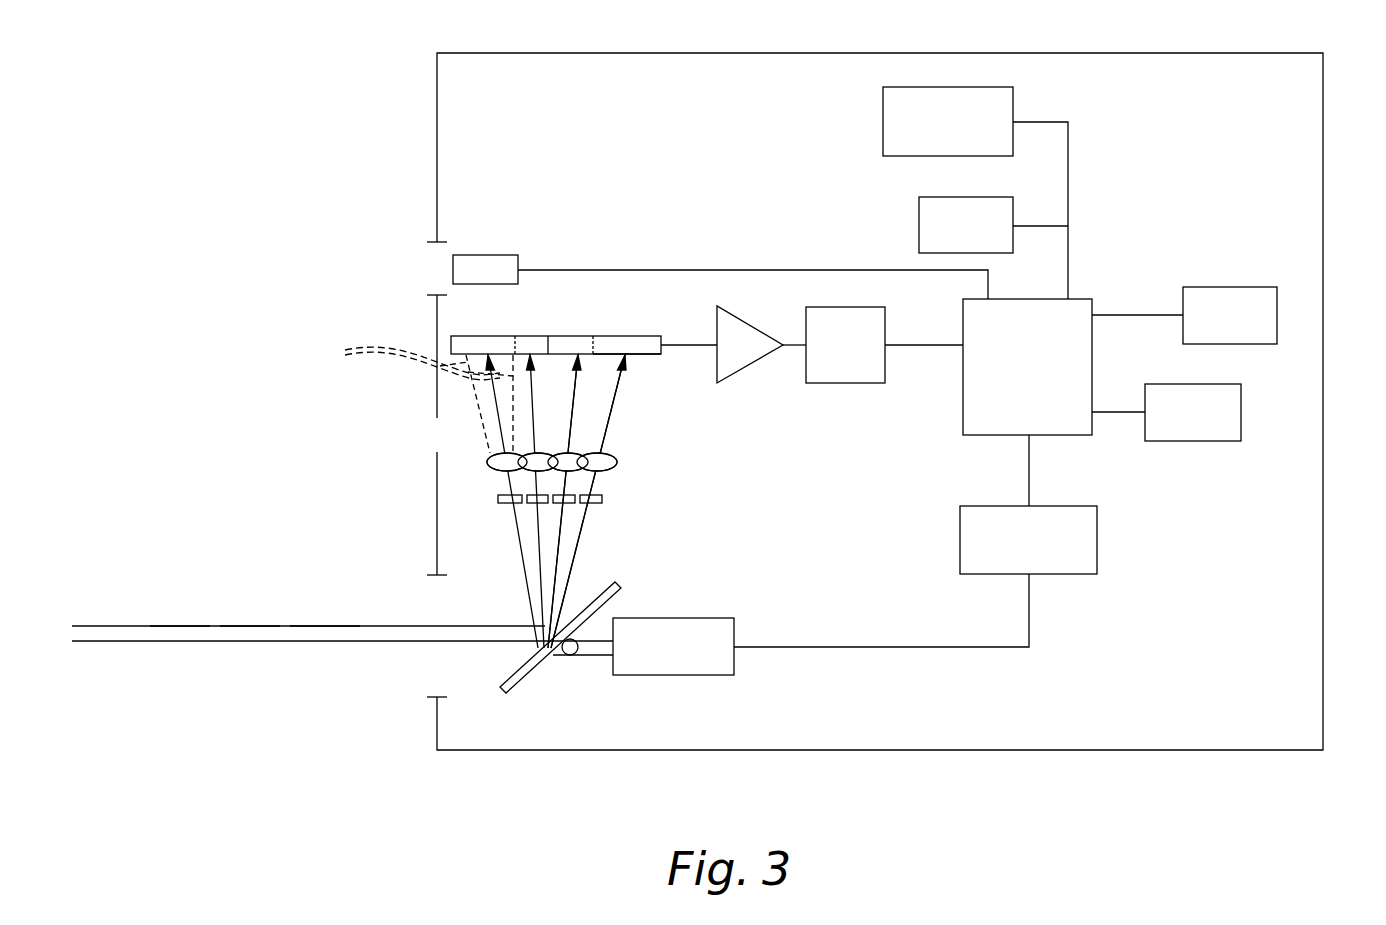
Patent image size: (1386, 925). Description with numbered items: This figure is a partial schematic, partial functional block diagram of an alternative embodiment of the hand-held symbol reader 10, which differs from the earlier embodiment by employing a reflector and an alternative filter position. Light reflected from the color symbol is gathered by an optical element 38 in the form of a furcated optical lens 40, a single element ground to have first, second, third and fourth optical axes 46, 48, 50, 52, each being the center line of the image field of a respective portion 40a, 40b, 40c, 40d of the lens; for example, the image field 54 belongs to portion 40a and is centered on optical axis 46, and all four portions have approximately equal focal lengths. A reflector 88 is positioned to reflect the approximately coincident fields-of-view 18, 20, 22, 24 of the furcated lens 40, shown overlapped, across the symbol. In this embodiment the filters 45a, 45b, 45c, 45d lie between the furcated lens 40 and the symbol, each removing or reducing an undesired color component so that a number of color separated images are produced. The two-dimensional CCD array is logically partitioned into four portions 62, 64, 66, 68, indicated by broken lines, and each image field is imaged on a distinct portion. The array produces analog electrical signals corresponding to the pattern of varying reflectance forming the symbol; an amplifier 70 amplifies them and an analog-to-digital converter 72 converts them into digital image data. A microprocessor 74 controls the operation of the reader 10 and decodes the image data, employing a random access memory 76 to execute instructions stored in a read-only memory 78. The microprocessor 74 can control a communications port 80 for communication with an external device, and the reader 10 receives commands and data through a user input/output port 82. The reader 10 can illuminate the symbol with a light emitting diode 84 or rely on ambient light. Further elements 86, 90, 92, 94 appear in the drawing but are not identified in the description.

The hand-held symbol reader 10 is at (390, 145).
The field-of-view 18 is at (135, 626).
The field-of-view 20 is at (200, 626).
The field-of-view 22 is at (268, 626).
The field-of-view 24 is at (352, 626).
The optical element 38 is at (460, 425).
The furcated optical lens 40 is at (490, 459).
The portion of furcated lens 40a is at (498, 469).
The portion of furcated lens 40b is at (518, 476).
The portion of furcated lens 40c is at (600, 456).
The portion of furcated lens 40d is at (615, 463).
The filter 45a is at (498, 499).
The filter 45b is at (535, 504).
The filter 45c is at (570, 504).
The filter 45d is at (600, 498).
The first optical axis 46 is at (482, 390).
The second optical axis 48 is at (547, 385).
The third optical axis 50 is at (574, 403).
The fourth optical axis 52 is at (619, 380).
The image field 54 is at (409, 359).
The portion of two-dimensional CCD array 62 is at (493, 336).
The portion of two-dimensional CCD array 64 is at (557, 337).
The portion of two-dimensional CCD array 66 is at (590, 337).
The portion of two-dimensional CCD array 68 is at (635, 337).
The amplifier 70 is at (751, 366).
The analog-to-digital converter 72 is at (826, 384).
The microprocessor 74 is at (963, 427).
The random access memory 76 is at (937, 87).
The read-only memory 78 is at (919, 228).
The communications port 80 is at (1241, 412).
The user input/output port 82 is at (1277, 318).
The light emitting diode 84 is at (453, 272).
The rotation direction 86 is at (680, 594).
The reflector 88 is at (545, 668).
The motor 90 is at (690, 676).
The controller 92 is at (1097, 541).
The motor shaft 94 is at (588, 656).